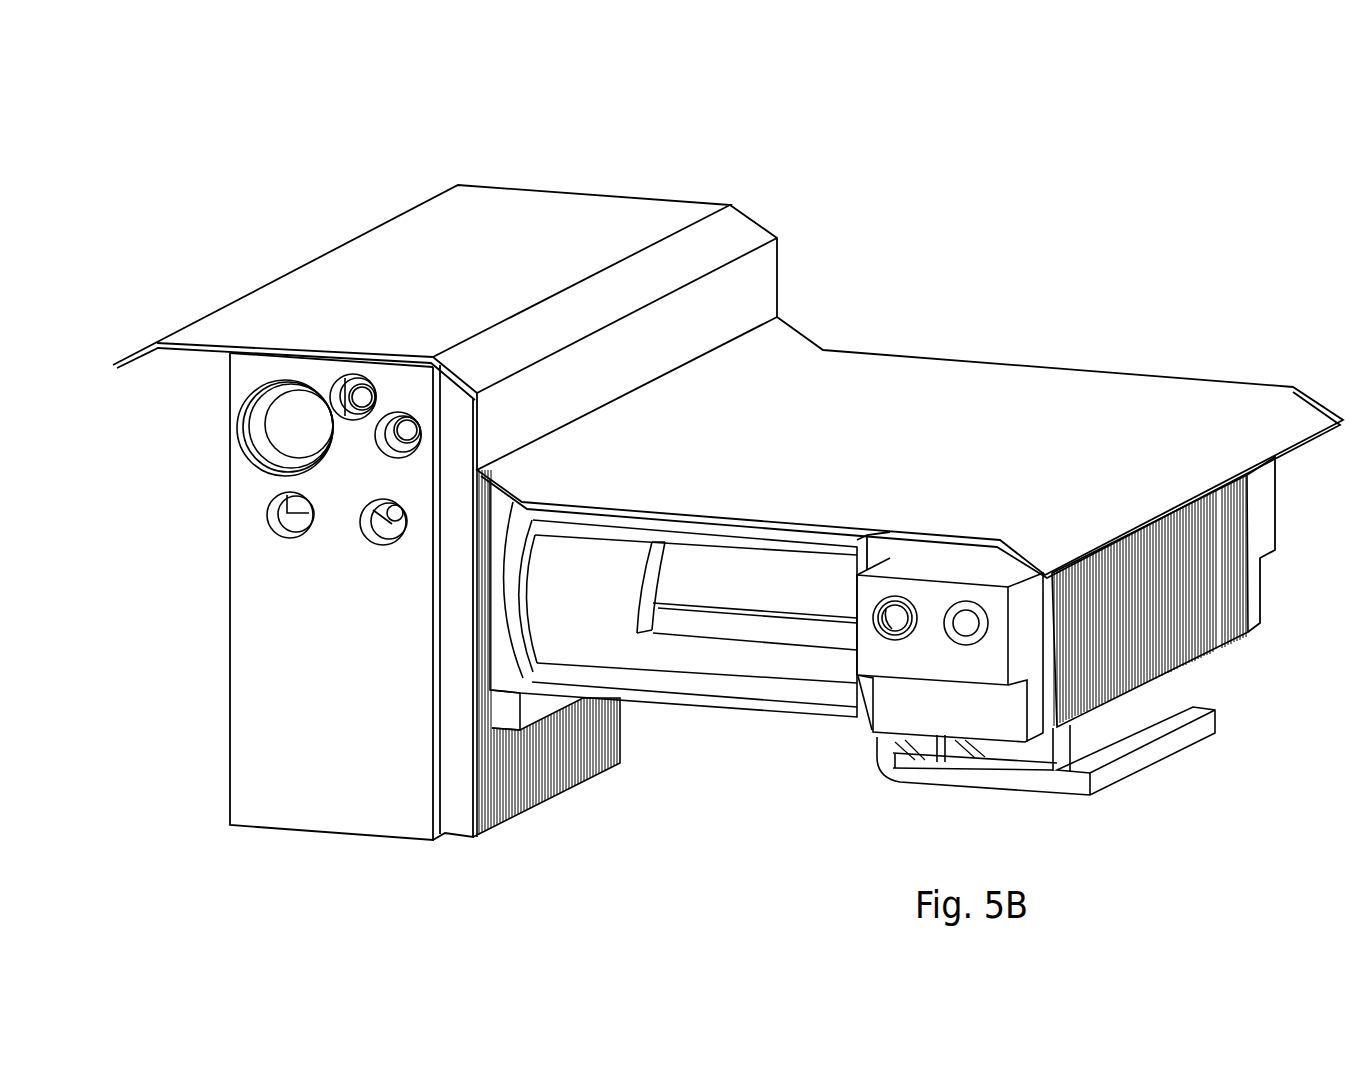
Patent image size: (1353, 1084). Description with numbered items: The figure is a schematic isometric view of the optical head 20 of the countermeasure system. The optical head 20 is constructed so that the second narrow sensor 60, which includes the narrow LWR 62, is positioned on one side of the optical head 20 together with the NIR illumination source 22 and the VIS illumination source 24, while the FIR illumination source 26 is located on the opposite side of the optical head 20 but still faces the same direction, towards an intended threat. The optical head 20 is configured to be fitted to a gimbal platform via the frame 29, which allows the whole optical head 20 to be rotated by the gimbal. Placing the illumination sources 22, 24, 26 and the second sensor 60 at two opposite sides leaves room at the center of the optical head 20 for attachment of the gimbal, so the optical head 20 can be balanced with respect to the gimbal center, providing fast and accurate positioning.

The optical head 20 is at (890, 207).
The frame 29 is at (783, 585).
The FIR illumination source 26 is at (912, 658).
The second narrow sensor 60 is at (275, 420).
The narrow LWR 62 is at (260, 443).
The NIR illumination source 22 is at (397, 437).
The VIS illumination source 24 is at (383, 527).